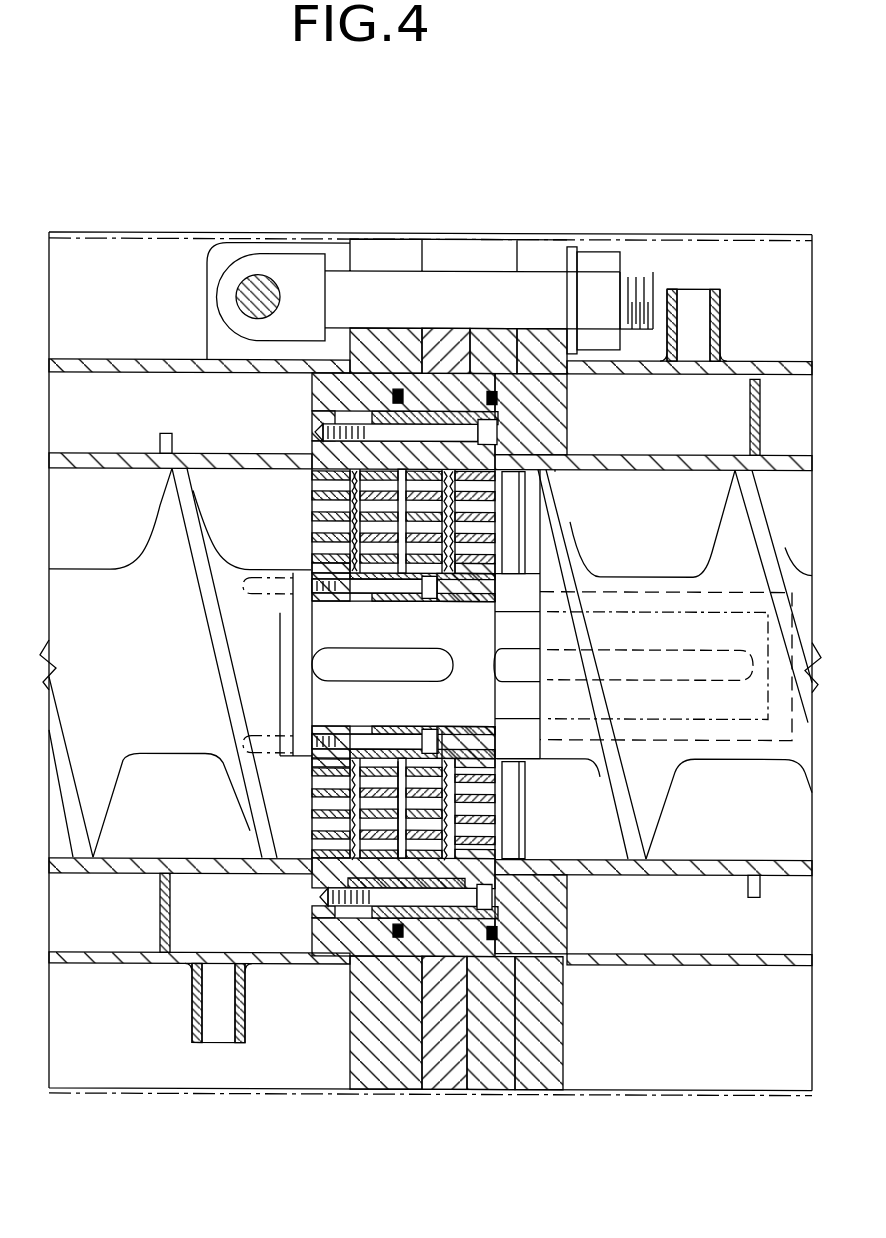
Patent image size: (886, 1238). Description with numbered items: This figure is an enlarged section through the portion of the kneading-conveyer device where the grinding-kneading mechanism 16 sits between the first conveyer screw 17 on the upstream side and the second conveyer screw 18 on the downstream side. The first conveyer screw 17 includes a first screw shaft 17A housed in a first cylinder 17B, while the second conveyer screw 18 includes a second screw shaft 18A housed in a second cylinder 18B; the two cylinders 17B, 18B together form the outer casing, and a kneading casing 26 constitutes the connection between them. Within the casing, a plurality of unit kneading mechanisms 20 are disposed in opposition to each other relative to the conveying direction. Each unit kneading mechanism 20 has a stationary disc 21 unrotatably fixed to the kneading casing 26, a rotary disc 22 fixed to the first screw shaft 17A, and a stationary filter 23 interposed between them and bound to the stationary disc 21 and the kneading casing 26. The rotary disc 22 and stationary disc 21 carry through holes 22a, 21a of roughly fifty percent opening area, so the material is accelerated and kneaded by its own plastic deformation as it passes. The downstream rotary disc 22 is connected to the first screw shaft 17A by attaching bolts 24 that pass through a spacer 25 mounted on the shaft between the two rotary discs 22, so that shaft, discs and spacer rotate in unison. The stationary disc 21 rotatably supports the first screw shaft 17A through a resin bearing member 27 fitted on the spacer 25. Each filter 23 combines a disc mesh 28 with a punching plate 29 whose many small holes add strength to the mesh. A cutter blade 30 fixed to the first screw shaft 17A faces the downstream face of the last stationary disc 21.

The grinding-kneading mechanism 16 is at (303, 799).
The first conveyer screw 17 is at (88, 492).
The first screw shaft 17A is at (330, 637).
The first cylinder 17B is at (122, 452).
The second conveyer screw 18 is at (783, 492).
The second screw shaft 18A is at (635, 575).
The second cylinder 18B is at (724, 465).
The unit kneading mechanism 20 is at (440, 445).
The stationary disc 21 is at (385, 880).
The through holes of stationary disc 21a is at (485, 795).
The rotary disc 22 is at (330, 830).
The through holes of rotary disc 22a is at (300, 520).
The stationary filter 23 is at (330, 815).
The attaching bolt 24 is at (275, 578).
The spacer 25 is at (310, 612).
The kneading casing 26 is at (415, 1095).
The resin bearing member 27 is at (400, 580).
The disc mesh 28 is at (450, 713).
The punching plate 29 is at (455, 728).
The cutter blade 30 is at (548, 520).